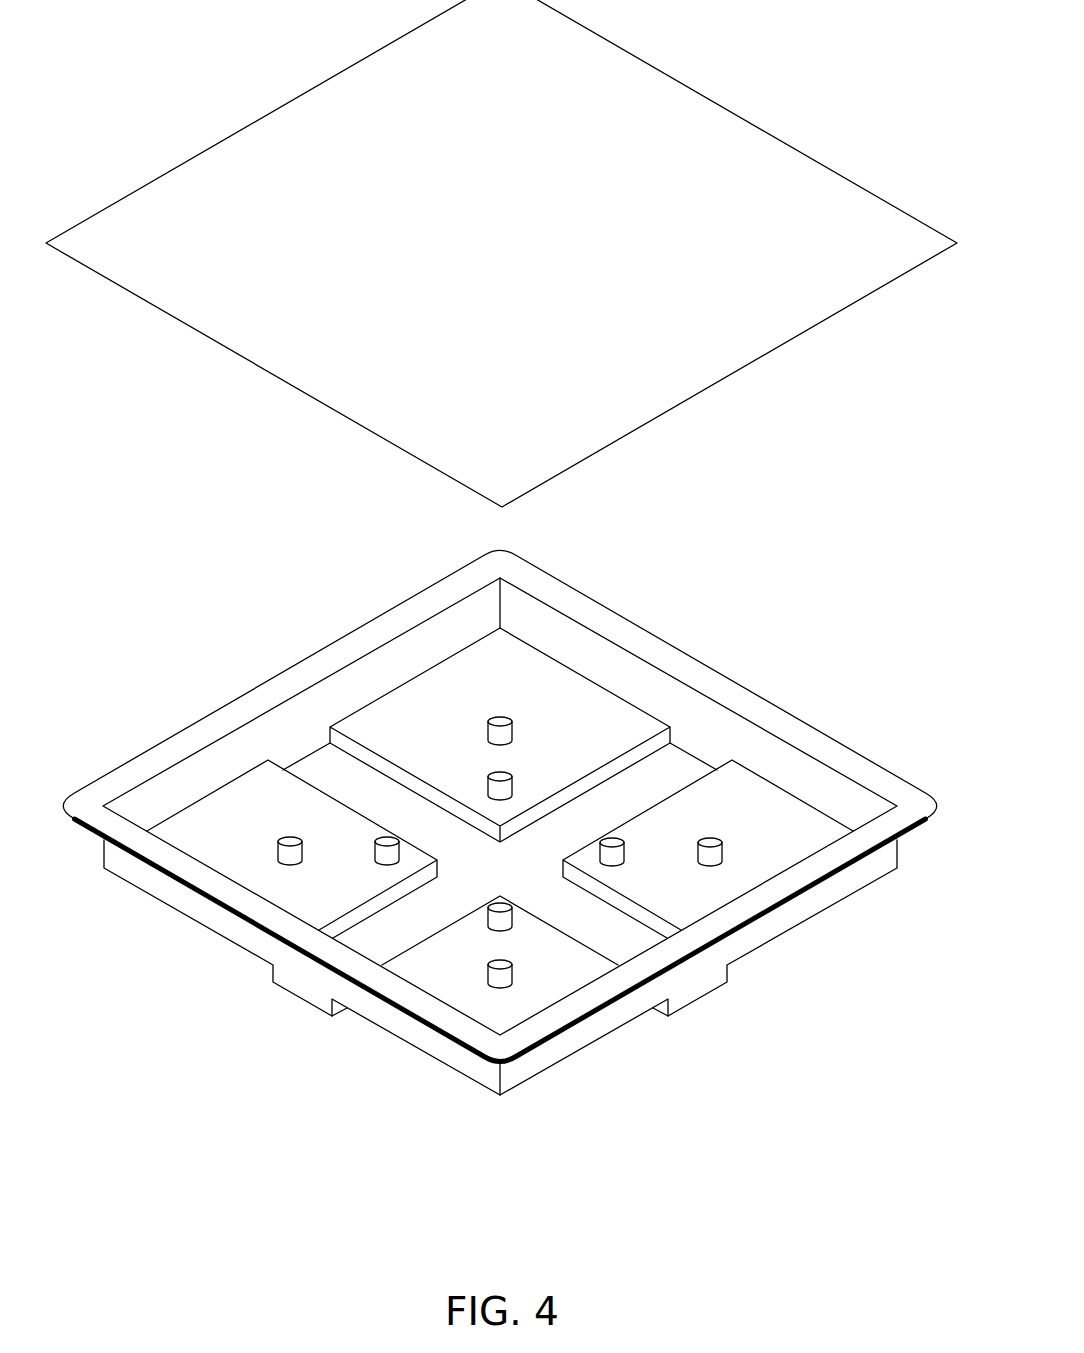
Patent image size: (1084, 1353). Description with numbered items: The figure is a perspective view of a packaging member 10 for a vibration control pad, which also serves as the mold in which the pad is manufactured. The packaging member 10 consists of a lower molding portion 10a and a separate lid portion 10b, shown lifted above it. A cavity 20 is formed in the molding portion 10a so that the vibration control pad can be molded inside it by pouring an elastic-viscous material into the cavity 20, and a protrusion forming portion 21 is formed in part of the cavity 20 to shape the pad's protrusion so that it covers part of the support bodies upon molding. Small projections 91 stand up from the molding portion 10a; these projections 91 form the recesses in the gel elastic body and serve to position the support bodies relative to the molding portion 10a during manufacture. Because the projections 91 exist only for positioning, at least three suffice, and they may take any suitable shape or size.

The packaging member 10 is at (772, 549).
The molding portion 10a is at (308, 653).
The lid portion 10b is at (253, 335).
The cavity 20 is at (233, 767).
The protrusion forming portion 21 is at (682, 776).
The projections 91 is at (387, 845).